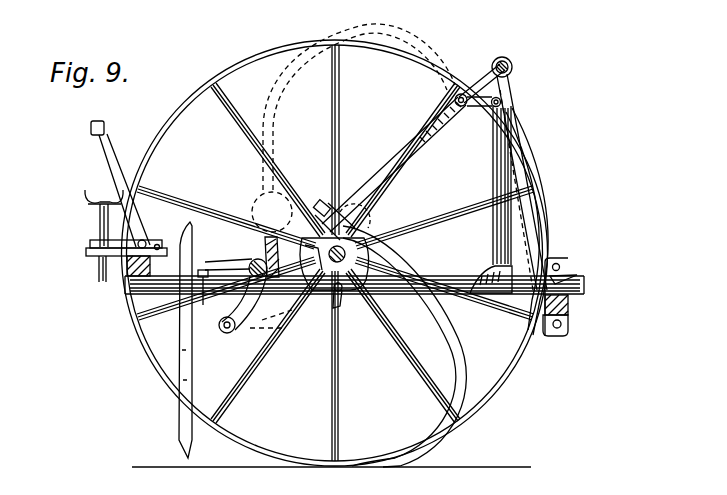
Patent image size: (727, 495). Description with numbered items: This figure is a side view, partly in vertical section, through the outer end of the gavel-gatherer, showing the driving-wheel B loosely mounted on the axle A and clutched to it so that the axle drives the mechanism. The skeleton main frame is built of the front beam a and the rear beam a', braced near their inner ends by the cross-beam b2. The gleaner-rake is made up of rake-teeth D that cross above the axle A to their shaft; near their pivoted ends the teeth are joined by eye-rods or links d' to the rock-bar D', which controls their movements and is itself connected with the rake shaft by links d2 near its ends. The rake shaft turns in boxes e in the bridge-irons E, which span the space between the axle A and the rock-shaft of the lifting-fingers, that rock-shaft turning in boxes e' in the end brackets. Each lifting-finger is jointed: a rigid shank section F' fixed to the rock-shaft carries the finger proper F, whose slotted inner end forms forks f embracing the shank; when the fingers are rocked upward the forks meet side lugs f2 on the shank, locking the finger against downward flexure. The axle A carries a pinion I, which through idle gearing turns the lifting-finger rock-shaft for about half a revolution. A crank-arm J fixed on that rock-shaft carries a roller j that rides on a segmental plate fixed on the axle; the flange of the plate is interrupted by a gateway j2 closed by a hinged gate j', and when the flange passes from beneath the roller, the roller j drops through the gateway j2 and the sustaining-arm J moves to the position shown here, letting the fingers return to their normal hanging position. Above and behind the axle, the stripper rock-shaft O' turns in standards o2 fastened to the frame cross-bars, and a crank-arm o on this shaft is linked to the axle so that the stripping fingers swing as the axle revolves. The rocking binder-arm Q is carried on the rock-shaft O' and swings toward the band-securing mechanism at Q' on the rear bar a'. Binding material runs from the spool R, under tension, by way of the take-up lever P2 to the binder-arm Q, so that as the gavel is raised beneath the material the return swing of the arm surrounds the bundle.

The driving-wheel B is at (335, 250).
The links or eye-rods d2 is at (353, 128).
The front beam a is at (342, 292).
The take-up lever P2 is at (120, 184).
The spool R is at (122, 236).
The forks f is at (172, 277).
The jointed lifting-finger F is at (176, 340).
The rigid shank section F' is at (236, 265).
The side lugs f2 is at (206, 296).
The bridge-irons E is at (263, 247).
The crank-arm J is at (243, 300).
The roller j is at (225, 338).
The gateway j2 is at (282, 314).
The axle A is at (334, 264).
The pinion I is at (313, 257).
The gate or hinged section j' is at (345, 302).
The rock-bar D' is at (334, 207).
The eye-rods or links d' is at (366, 220).
The rake-teeth D is at (412, 346).
The boxes e' is at (394, 164).
The boxes e is at (480, 100).
The rock-shaft O' is at (517, 62).
The crank-arm o is at (521, 148).
The standards o2 is at (495, 183).
The cross-beam b2 is at (452, 283).
The binder-arm Q is at (540, 221).
The band-securing mechanism Q' is at (572, 292).
The rear beam a' is at (568, 315).